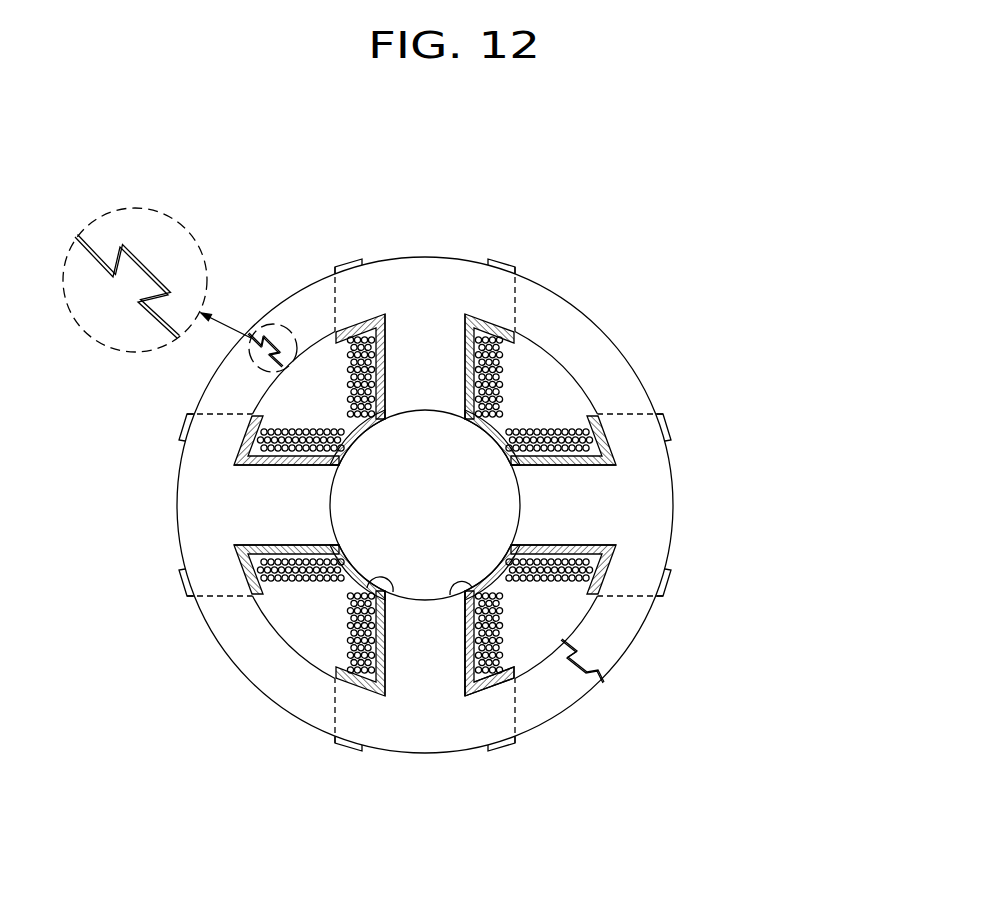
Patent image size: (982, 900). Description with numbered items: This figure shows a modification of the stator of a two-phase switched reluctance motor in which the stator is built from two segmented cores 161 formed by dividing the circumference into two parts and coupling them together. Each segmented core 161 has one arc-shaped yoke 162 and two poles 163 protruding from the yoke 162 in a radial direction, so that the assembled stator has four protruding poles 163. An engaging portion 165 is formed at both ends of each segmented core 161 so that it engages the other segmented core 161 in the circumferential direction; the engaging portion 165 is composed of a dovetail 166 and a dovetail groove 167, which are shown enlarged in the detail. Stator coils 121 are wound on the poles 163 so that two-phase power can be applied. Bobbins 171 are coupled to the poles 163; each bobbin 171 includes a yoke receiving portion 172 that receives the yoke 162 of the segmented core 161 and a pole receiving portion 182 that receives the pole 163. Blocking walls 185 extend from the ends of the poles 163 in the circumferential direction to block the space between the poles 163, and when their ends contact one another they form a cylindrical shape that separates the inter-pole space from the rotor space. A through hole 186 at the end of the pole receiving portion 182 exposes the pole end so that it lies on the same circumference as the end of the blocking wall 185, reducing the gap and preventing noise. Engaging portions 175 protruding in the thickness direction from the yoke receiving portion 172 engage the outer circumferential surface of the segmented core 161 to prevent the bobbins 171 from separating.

The stator coil 121 is at (500, 373).
The segmented core 161 is at (753, 487).
The yoke 162 is at (630, 575).
The pole 163 is at (557, 503).
The engaging portion 165 is at (180, 247).
The dovetail 166 is at (127, 268).
The dovetail groove 167 is at (143, 272).
The bobbin 171 is at (447, 719).
The yoke receiving portion 172 is at (513, 675).
The engaging portion 175 is at (188, 425).
The pole receiving portion 182 is at (466, 641).
The blocking wall 185 is at (461, 578).
The through hole 186 is at (352, 597).